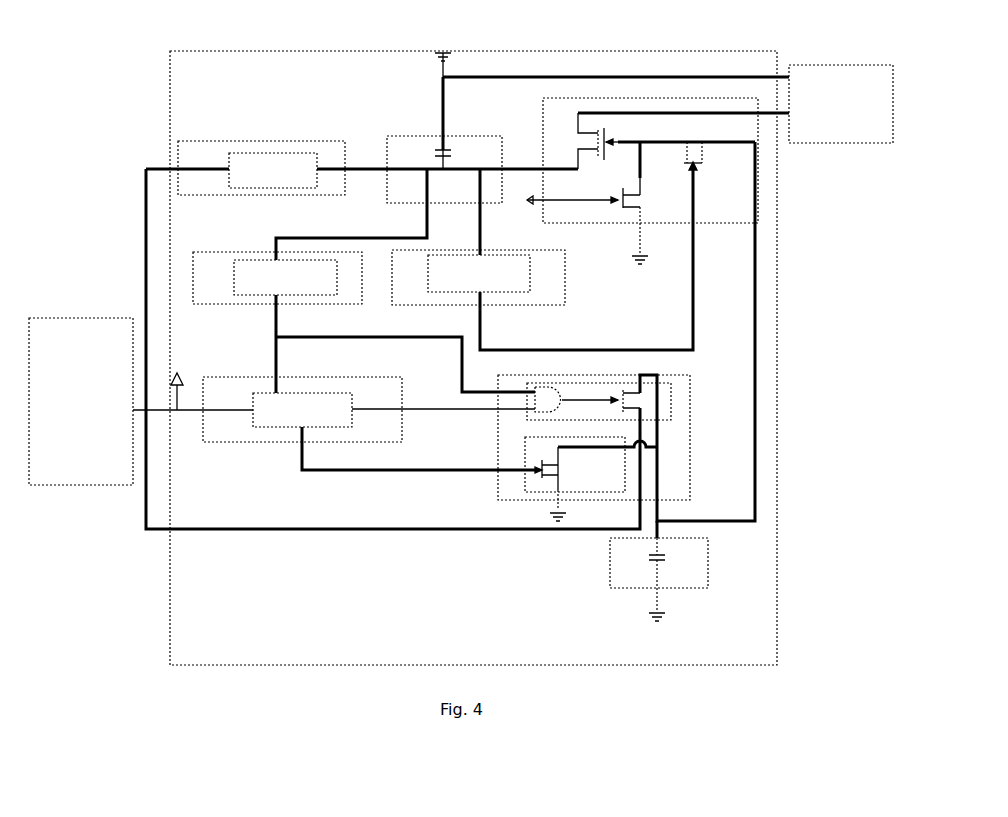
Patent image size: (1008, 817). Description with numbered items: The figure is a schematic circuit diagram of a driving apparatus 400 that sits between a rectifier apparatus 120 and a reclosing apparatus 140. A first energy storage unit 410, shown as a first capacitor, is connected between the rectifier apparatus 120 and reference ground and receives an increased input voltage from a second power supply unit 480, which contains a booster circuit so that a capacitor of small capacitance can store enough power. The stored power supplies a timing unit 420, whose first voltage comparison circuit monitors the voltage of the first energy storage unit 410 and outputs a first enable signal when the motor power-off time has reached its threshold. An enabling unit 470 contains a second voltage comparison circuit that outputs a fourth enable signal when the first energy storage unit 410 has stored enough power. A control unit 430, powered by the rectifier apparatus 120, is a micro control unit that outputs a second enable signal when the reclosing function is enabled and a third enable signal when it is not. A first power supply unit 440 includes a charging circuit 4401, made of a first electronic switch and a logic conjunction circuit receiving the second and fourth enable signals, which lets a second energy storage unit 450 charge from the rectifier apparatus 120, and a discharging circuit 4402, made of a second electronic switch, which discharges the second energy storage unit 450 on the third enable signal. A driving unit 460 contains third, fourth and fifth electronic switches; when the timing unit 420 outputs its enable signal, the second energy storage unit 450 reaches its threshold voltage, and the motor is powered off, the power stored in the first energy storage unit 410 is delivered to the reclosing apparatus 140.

The driving apparatus 400 is at (535, 50).
The reclosing apparatus 140 is at (840, 66).
The rectifier apparatus 120 is at (88, 315).
The second power supply unit 480 is at (245, 143).
The first energy storage unit 410 is at (392, 140).
The driving unit 460 is at (545, 149).
The enabling unit 470 is at (240, 253).
The timing unit 420 is at (530, 252).
The control unit 430 is at (302, 375).
The first power supply unit 440 is at (591, 444).
The charging circuit 4401 is at (672, 398).
The discharging circuit 4402 is at (527, 445).
The second energy storage unit 450 is at (608, 588).